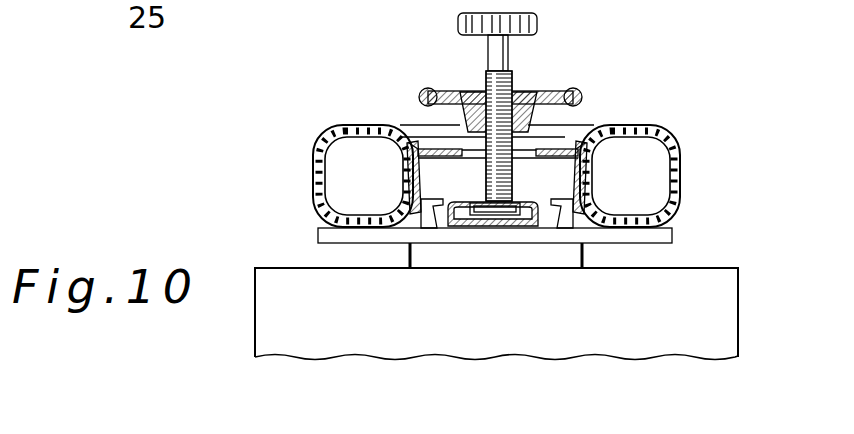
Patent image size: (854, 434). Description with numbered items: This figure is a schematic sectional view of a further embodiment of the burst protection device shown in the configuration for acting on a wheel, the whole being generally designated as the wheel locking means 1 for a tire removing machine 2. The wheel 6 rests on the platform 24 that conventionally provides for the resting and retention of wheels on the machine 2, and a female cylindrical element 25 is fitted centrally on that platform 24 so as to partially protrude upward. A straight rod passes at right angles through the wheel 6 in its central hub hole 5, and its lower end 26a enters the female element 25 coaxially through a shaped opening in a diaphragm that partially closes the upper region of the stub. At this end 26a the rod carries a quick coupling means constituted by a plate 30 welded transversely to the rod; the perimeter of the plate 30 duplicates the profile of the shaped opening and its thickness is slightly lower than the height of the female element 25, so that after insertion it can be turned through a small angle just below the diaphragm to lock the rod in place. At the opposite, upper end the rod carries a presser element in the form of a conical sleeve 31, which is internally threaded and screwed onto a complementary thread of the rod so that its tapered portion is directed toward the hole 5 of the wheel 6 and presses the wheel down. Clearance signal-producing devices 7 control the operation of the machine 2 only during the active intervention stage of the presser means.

The wheel locking means 1 is at (617, 80).
The tire removing machine 2 is at (648, 330).
The central hole 5 is at (472, 152).
The wheel 6 is at (573, 127).
The clearance signal-producing devices 7 is at (465, 212).
The platform 24 is at (672, 236).
The female cylindrical element 25 is at (520, 214).
The end of the rod 26a is at (497, 213).
The plate 30 is at (516, 215).
The conical sleeve 31 is at (527, 97).